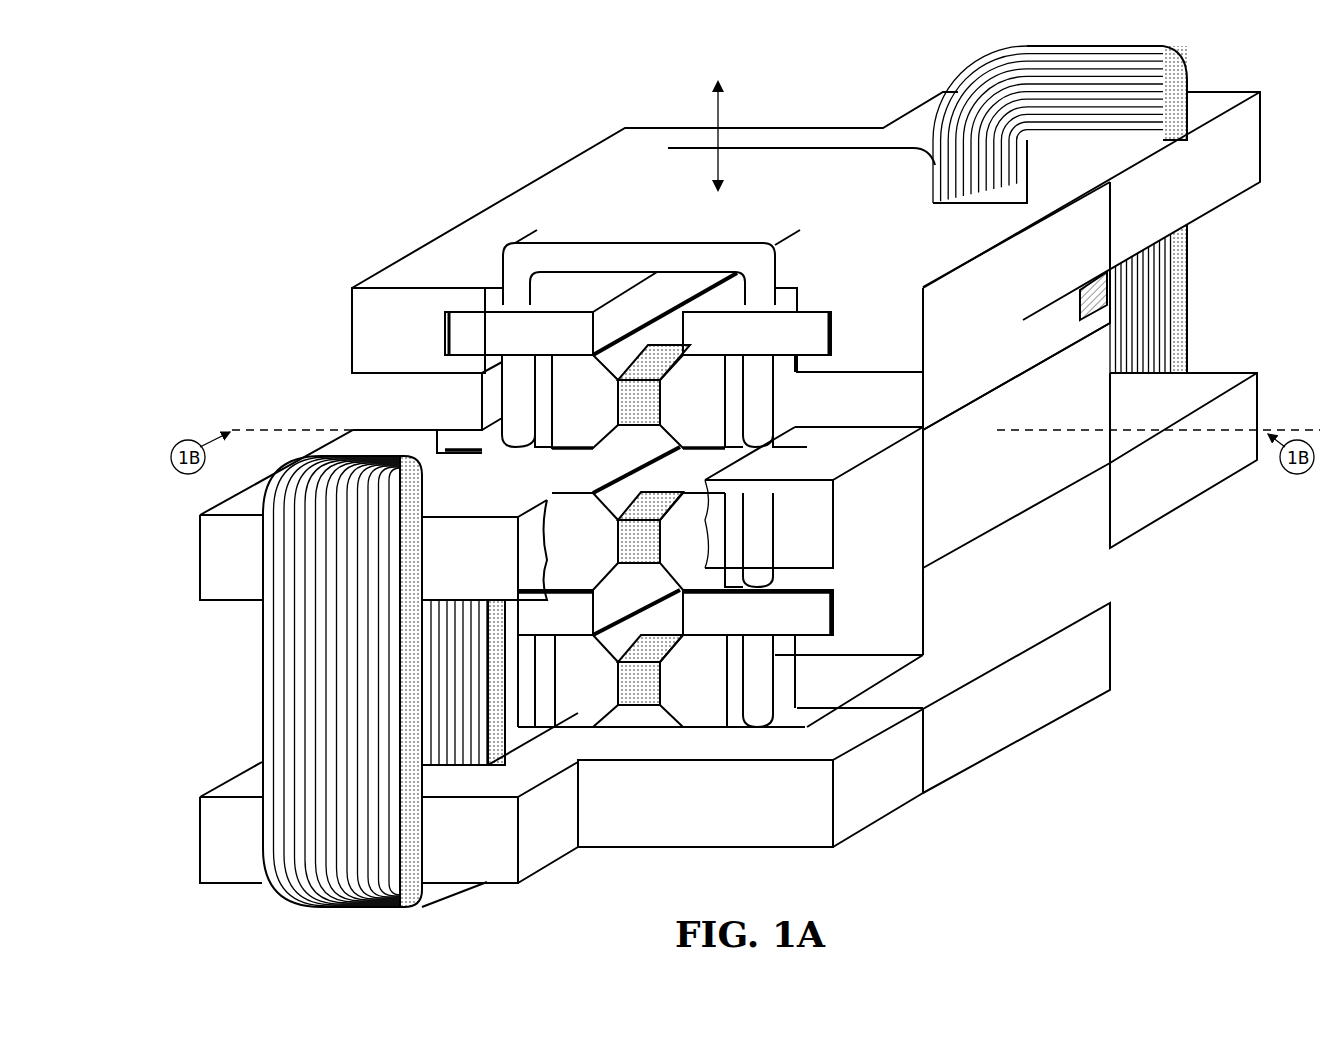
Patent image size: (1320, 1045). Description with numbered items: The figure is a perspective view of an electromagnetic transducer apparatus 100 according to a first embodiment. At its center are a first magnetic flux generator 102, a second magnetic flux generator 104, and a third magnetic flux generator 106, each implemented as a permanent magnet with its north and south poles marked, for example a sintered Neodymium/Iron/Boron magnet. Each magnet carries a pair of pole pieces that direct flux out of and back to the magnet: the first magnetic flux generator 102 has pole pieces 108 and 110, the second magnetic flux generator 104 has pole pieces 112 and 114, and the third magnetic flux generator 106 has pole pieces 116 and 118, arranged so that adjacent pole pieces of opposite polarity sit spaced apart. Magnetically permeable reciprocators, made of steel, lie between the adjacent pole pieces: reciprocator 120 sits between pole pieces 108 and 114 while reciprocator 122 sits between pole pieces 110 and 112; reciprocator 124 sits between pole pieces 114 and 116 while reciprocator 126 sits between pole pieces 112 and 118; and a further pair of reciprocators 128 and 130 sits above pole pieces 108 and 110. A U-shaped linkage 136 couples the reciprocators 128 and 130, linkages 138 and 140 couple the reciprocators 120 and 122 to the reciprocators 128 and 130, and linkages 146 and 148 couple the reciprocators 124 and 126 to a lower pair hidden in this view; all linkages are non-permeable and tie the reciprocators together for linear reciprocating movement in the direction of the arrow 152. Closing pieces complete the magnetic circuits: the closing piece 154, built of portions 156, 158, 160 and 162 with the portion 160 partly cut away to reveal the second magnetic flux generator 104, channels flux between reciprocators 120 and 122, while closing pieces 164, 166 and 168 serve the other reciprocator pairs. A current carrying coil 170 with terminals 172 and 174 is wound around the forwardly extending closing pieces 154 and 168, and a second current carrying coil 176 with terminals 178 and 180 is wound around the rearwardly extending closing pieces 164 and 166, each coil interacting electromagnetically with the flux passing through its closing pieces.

The electromagnetic transducer apparatus 100 is at (352, 155).
The first magnetic flux generator 102 is at (640, 376).
The second magnetic flux generator 104 is at (640, 516).
The third magnetic flux generator 106 is at (640, 658).
The pole piece 108 is at (537, 405).
The pole piece 110 is at (730, 416).
The pole piece 112 is at (758, 612).
The pole piece 114 is at (555, 612).
The pole piece 116 is at (580, 720).
The pole piece 118 is at (700, 720).
The reciprocator 120 is at (405, 422).
The reciprocator 122 is at (713, 522).
The reciprocator 124 is at (520, 640).
The reciprocator 126 is at (838, 622).
The reciprocator 128 is at (467, 327).
The reciprocator 130 is at (805, 335).
The U-shaped linkage 136 is at (760, 155).
The linkage 138 is at (520, 412).
The linkage 140 is at (757, 416).
The linkage 146 is at (520, 735).
The linkage 148 is at (757, 680).
The arrow 152 is at (692, 135).
The closing piece 154 is at (192, 560).
The closing piece portion 156 is at (393, 417).
The closing piece portion 158 is at (303, 467).
The closing piece portion 160 is at (887, 512).
The closing piece portion 162 is at (1195, 372).
The closing piece 164 is at (955, 590).
The closing piece 166 is at (963, 297).
The closing piece 168 is at (192, 847).
The current carrying coil 170 is at (262, 604).
The terminal 172 is at (248, 515).
The terminal 174 is at (370, 517).
The current carrying coil 176 is at (1005, 85).
The terminal 178 is at (1090, 55).
The terminal 180 is at (1215, 52).